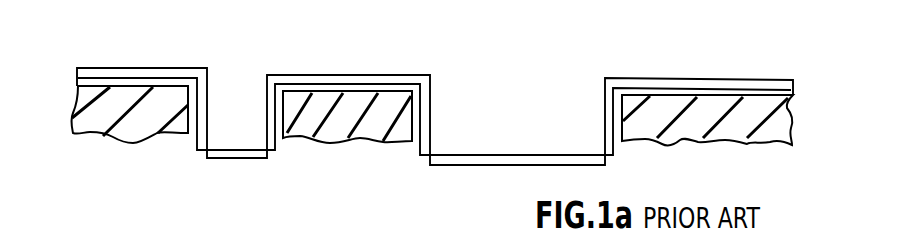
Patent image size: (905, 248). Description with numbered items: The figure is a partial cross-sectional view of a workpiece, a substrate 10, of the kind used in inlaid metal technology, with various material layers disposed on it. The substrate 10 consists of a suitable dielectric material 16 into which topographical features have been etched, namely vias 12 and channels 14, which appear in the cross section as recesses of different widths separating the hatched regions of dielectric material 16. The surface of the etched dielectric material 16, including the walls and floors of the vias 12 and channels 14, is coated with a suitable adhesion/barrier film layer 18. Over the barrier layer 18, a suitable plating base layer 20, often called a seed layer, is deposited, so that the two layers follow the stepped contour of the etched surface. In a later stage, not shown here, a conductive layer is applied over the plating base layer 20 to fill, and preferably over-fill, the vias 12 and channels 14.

The substrate 10 is at (118, 160).
The vias 12 is at (233, 84).
The channels 14 is at (482, 98).
The dielectric material 16 is at (776, 128).
The adhesion/barrier film layer 18 is at (790, 92).
The plating base layer 20 is at (740, 78).